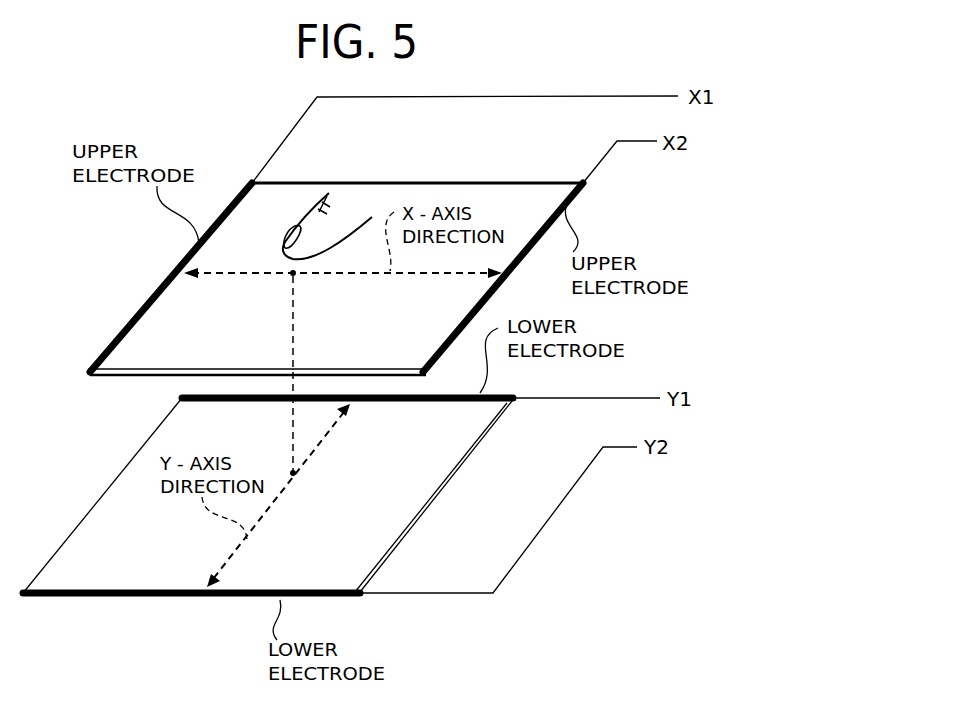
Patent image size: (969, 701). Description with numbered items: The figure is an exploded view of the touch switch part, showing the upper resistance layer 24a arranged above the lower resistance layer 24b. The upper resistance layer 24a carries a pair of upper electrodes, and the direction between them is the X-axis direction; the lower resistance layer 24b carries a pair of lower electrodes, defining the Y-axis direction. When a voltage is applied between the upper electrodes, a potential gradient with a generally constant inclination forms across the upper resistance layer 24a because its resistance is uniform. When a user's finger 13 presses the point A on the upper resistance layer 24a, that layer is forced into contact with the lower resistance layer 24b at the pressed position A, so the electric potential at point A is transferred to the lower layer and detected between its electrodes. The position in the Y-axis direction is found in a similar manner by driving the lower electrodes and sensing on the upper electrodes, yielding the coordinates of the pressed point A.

The user's finger 13 is at (338, 223).
The upper resistance layer 24a is at (428, 182).
The lower resistance layer 24b is at (82, 522).
The pressed point A is at (296, 276).